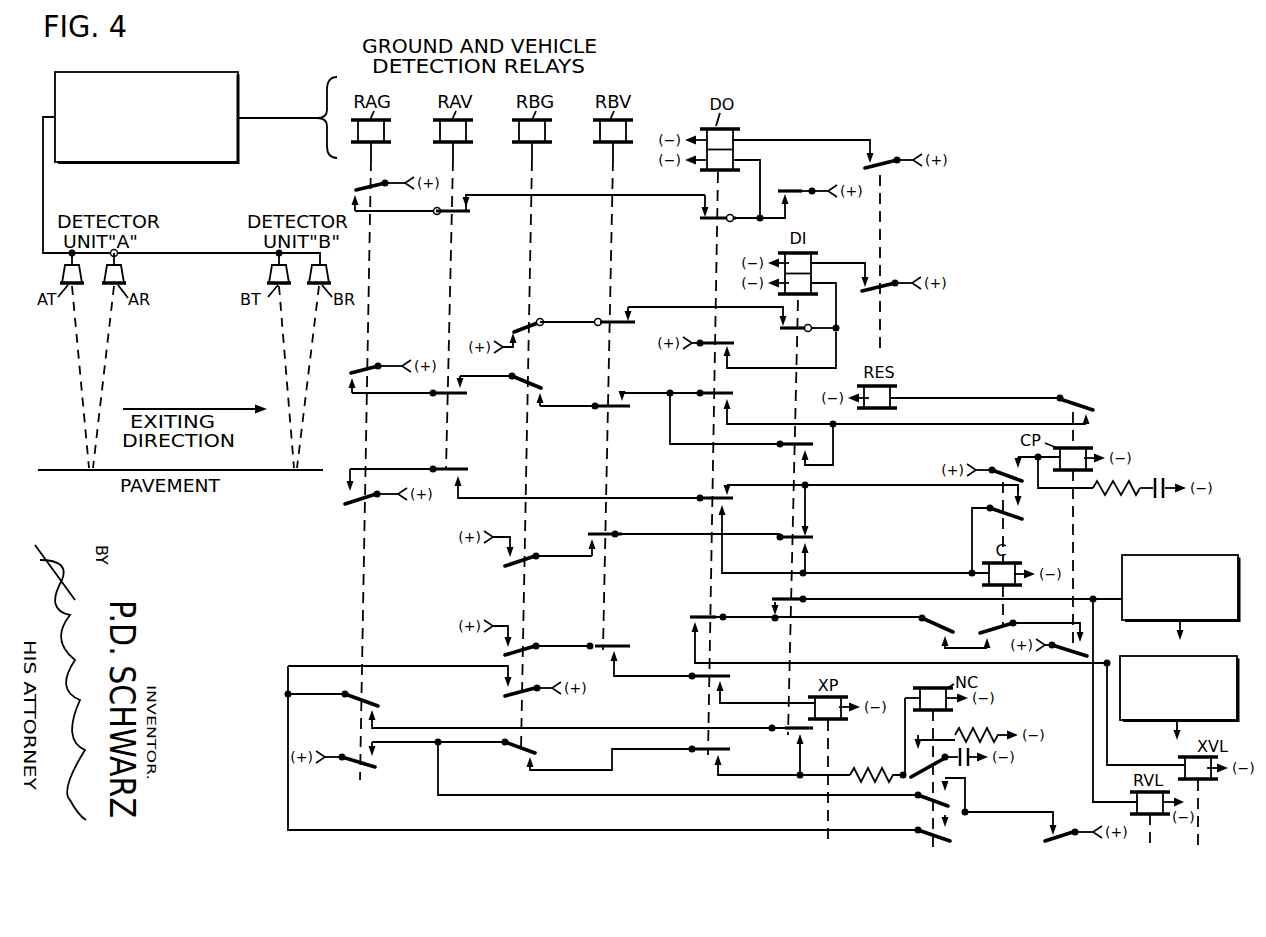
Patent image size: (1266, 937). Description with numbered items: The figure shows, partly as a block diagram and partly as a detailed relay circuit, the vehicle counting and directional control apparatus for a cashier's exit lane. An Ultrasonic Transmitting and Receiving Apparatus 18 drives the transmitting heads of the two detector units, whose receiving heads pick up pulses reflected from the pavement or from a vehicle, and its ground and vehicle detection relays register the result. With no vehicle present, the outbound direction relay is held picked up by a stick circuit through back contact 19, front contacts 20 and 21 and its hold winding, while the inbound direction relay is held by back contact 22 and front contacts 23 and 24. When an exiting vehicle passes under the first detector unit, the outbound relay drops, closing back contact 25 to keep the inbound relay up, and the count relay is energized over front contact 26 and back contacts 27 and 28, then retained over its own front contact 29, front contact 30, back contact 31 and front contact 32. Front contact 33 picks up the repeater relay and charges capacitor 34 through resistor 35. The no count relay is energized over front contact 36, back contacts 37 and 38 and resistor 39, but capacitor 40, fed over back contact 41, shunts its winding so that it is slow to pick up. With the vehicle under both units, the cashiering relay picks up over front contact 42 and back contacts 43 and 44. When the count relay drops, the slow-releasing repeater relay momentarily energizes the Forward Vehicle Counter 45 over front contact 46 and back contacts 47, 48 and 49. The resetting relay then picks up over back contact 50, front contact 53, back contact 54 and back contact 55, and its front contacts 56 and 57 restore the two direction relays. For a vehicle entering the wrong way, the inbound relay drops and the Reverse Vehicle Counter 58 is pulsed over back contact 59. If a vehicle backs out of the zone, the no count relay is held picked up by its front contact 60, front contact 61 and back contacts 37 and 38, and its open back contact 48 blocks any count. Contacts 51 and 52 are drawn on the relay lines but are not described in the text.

The Ultrasonic Transmitting and Receiving Apparatus 18 is at (166, 74).
The back contact of relay RAG 19 is at (360, 186).
The front contact of relay RAV 20 is at (460, 214).
The front contact of relay DO 21 is at (700, 219).
The back contact of relay RBG 22 is at (531, 329).
The front contact of relay RBV 23 is at (628, 327).
The front contact of relay DI 24 is at (784, 332).
The back contact of relay DO 25 is at (725, 345).
The front contact of relay RAG 26 is at (371, 499).
The back contact of relay RAV 27 is at (457, 470).
The back contact of relay DO 28 is at (700, 505).
The front contact of relay C 29 is at (1021, 517).
The front contact of relay DI 30 is at (782, 541).
The back contact of relay RBV 31 is at (612, 533).
The front contact of relay RBG 32 is at (530, 555).
The front contact of relay C 33 is at (1006, 467).
The capacitor 34 is at (1165, 484).
The resistor 35 is at (1115, 493).
The front contact of relay RAG 36 is at (377, 766).
The back contact of relay RBG 37 is at (537, 751).
The back contact of relay DO 38 is at (729, 756).
The resistor 39 is at (878, 766).
The capacitor 40 is at (969, 767).
The back contact of relay NC 41 is at (975, 737).
The front contact of relay RBG 42 is at (533, 644).
The back contact of relay RBV 43 is at (614, 645).
The back contact of relay DO 44 is at (729, 682).
The Forward Vehicle Counter 45 is at (1203, 657).
The front contact of relay CP 46 is at (1088, 655).
The back contact of relay C 47 is at (991, 630).
The back contact of relay NC 48 is at (921, 628).
The back contact of relay DO 49 is at (719, 615).
The back contact of relay RAG 50 is at (355, 370).
The RAV relay contact 51 is at (461, 395).
The RBG relay contact 52 is at (511, 384).
The front contact of relay RBV 53 is at (627, 409).
The back contact of relay DO 54 is at (735, 397).
The back contact of relay CP 55 is at (1093, 410).
The front contact of relay RES 56 is at (886, 283).
The front contact of relay RES 57 is at (882, 163).
The Reverse Vehicle Counter 58 is at (1200, 556).
The back contact of relay DI 59 is at (799, 599).
The front contact of relay NC 60 is at (917, 804).
The front contact of relay CP 61 is at (1044, 839).